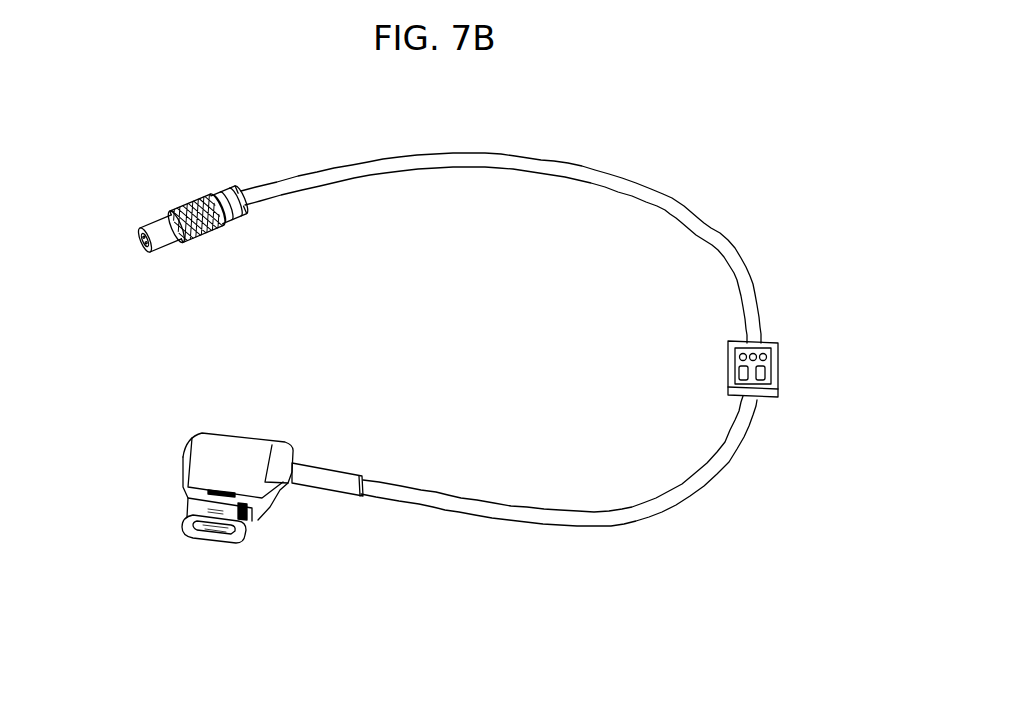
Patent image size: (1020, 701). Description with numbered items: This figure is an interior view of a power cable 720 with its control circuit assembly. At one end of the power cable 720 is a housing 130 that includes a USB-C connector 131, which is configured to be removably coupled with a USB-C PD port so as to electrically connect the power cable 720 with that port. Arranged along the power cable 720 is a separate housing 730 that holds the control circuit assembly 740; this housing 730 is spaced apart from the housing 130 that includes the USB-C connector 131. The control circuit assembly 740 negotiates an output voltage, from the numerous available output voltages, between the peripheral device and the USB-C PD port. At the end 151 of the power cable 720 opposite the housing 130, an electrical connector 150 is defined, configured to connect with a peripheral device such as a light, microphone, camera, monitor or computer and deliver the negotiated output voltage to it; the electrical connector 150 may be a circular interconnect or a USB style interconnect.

The power cable 720 is at (740, 145).
The end 151 is at (302, 187).
The electrical connector 150 is at (230, 210).
The housing 730 is at (778, 340).
The control circuit assembly 740 is at (737, 368).
The housing 130 is at (163, 425).
The USB-C connector 131 is at (237, 540).